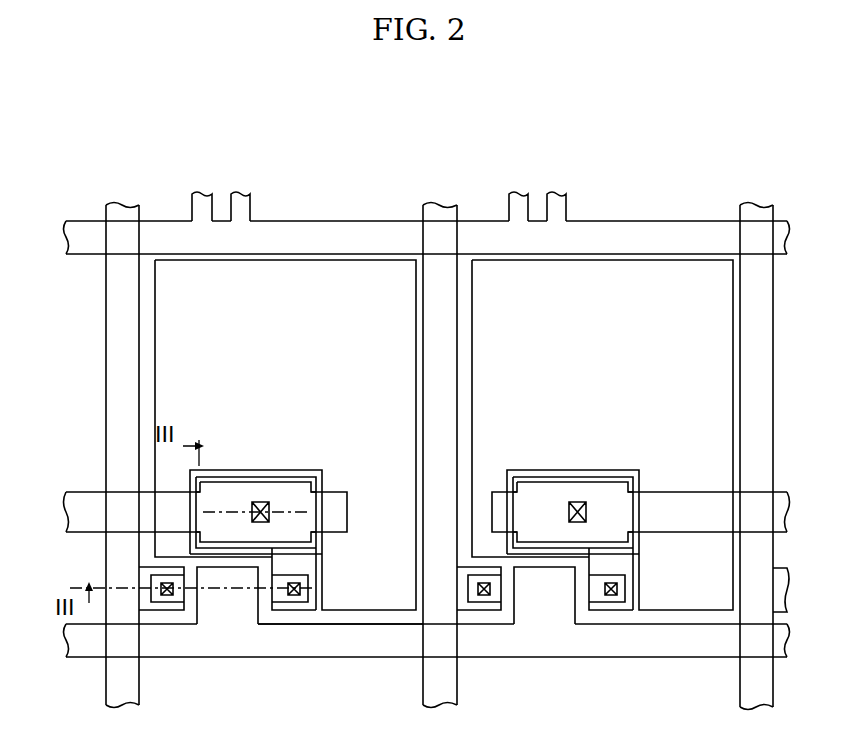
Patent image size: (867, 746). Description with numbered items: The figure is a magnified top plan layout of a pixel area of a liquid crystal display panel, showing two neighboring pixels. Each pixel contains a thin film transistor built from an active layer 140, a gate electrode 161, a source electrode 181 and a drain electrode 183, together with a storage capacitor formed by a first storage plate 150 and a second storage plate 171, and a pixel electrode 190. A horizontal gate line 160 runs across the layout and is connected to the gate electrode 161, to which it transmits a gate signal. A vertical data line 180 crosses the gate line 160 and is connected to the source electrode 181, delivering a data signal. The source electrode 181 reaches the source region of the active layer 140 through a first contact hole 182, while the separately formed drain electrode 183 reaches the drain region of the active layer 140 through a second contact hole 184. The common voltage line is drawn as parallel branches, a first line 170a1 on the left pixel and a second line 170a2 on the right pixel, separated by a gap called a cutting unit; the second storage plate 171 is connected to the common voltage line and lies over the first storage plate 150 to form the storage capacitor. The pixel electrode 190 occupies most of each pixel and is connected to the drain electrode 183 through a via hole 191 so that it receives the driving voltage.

The gate line 160 is at (90, 221).
The data line 180 is at (106, 558).
The pixel electrode 190 is at (153, 340).
The first storage plate 150 is at (324, 471).
The second storage plate 171 is at (235, 481).
The via hole 191 is at (261, 502).
The first lines 170a1 is at (118, 492).
The second lines 170a2 is at (667, 492).
The source electrode 181 is at (177, 609).
The first contact hole 182 is at (168, 604).
The drain electrode 183 is at (285, 604).
The second contact hole 184 is at (298, 604).
The gate electrode 161 is at (228, 618).
The active layer 140 is at (268, 608).